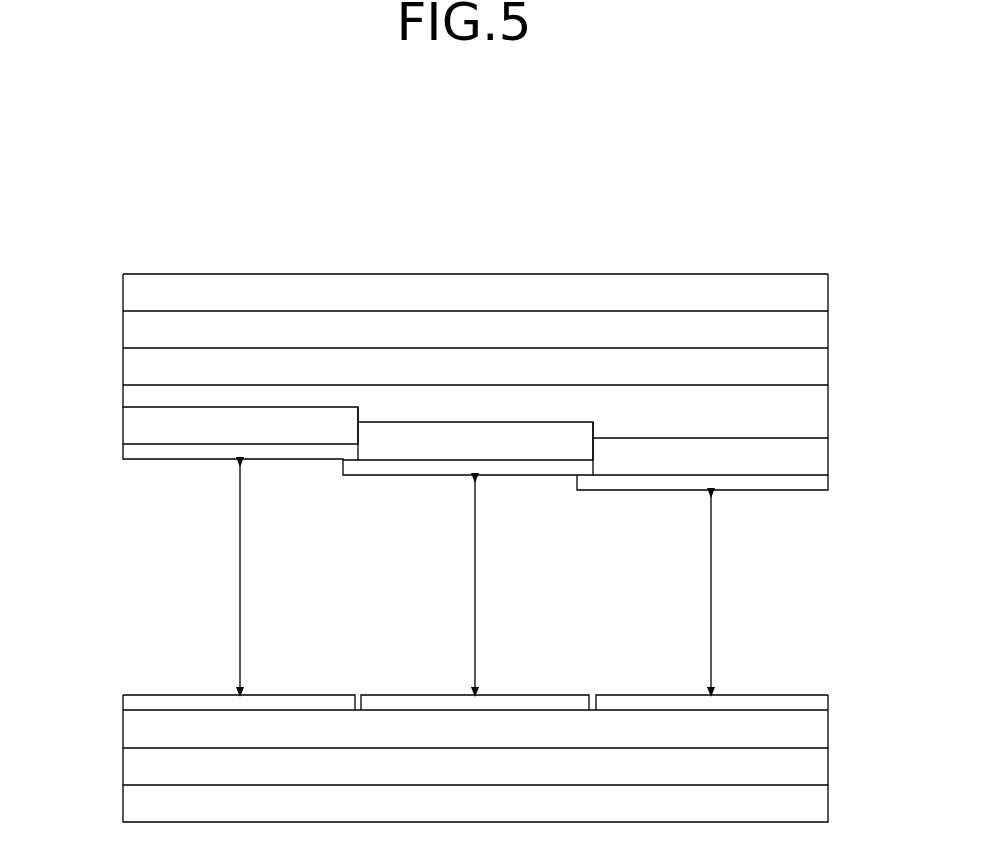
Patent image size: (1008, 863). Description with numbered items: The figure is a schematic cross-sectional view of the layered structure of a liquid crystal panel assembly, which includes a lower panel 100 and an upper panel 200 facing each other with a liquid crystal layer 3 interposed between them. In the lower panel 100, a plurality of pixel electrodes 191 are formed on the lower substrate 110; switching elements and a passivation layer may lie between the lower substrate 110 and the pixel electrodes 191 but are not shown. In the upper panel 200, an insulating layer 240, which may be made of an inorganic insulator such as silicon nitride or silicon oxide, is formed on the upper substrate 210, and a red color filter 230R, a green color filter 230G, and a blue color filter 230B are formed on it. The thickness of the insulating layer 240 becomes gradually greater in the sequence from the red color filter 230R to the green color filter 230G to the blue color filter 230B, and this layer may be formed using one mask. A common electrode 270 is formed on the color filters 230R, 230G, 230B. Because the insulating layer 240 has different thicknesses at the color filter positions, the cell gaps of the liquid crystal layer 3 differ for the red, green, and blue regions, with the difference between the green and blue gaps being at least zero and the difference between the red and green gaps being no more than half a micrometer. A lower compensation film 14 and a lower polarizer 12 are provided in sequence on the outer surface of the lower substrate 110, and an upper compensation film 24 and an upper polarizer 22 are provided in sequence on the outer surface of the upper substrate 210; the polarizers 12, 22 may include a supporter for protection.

The upper polarizer 22 is at (148, 290).
The upper compensation film 24 is at (148, 329).
The upper substrate 210 is at (148, 365).
The insulating layer 240 is at (148, 397).
The common electrode 270 is at (148, 453).
The red color filter 230R is at (185, 425).
The green color filter 230G is at (420, 441).
The blue color filter 230B is at (657, 457).
The upper panel 200 is at (472, 422).
The liquid crystal layer 3 is at (843, 495).
The lower panel 100 is at (471, 736).
The pixel electrodes 191 is at (162, 703).
The lower substrate 110 is at (148, 727).
The lower compensation film 14 is at (148, 766).
The lower polarizer 12 is at (148, 803).